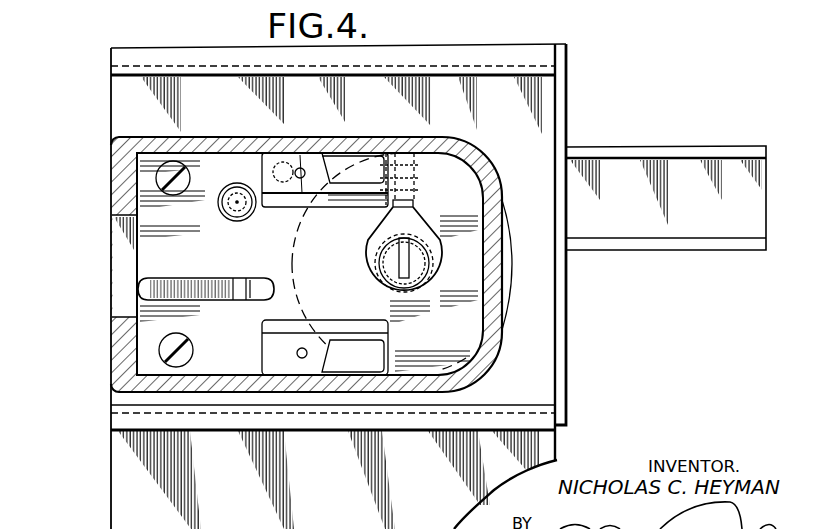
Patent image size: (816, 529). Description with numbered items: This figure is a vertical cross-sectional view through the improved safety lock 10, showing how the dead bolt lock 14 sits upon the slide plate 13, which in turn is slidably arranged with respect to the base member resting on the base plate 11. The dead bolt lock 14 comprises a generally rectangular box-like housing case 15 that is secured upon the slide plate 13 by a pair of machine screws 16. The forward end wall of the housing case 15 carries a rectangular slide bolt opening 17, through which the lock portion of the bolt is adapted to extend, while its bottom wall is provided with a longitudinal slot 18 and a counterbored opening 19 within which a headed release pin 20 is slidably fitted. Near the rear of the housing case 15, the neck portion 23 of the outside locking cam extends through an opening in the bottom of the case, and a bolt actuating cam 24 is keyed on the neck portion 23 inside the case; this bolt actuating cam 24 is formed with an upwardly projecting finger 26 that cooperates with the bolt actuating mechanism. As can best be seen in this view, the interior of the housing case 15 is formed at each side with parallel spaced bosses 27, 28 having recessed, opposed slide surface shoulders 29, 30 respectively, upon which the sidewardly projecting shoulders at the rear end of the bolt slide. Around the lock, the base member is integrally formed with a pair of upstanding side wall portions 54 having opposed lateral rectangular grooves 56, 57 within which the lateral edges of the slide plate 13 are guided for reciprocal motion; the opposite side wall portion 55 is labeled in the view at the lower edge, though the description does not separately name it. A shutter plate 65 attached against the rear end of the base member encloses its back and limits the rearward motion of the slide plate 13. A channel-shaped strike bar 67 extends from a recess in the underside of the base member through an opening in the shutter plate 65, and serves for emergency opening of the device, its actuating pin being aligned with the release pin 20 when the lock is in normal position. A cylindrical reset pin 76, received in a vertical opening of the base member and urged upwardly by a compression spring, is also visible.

The safety lock 10 is at (587, 48).
The base plate 11 is at (555, 437).
The slide plate 13 is at (545, 108).
The dead bolt lock 14 is at (152, 137).
The housing case 15 is at (468, 158).
The machine screws 16 is at (178, 168).
The slide bolt opening 17 is at (125, 315).
The longitudinal slot 18 is at (205, 300).
The counterbored opening 19 is at (240, 210).
The release pin 20 is at (235, 190).
The neck portion 23 is at (412, 277).
The bolt actuating cam 24 is at (442, 268).
The finger 26 is at (413, 208).
The boss 27 is at (302, 152).
The boss 28 is at (290, 370).
The slide surface shoulder 29 is at (330, 207).
The slide surface shoulder 30 is at (283, 320).
The side wall portions 54 is at (111, 58).
The lower door rail 55 is at (120, 422).
The lateral rectangular groove 56 is at (512, 66).
The lateral rectangular groove 57 is at (490, 410).
The shutter plate 65 is at (568, 318).
The strike bar 67 is at (672, 168).
The reset pin 76 is at (262, 280).